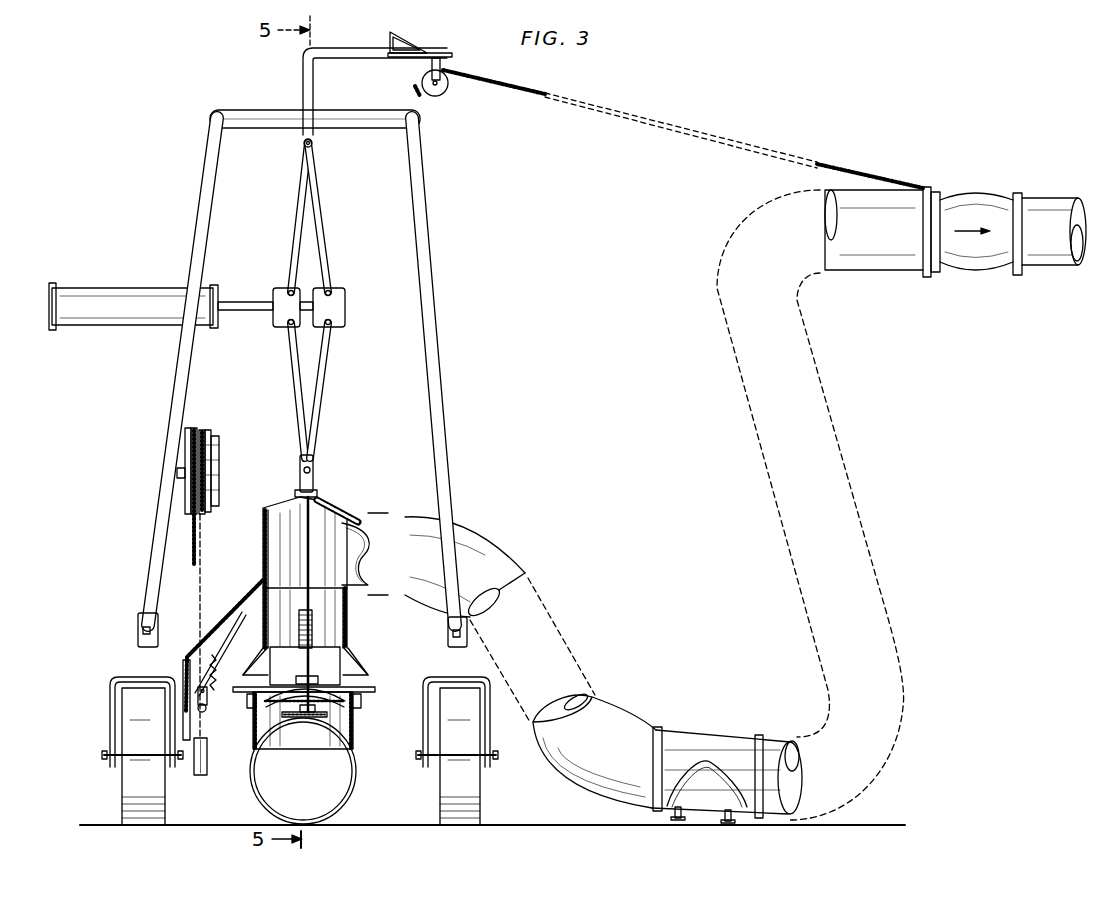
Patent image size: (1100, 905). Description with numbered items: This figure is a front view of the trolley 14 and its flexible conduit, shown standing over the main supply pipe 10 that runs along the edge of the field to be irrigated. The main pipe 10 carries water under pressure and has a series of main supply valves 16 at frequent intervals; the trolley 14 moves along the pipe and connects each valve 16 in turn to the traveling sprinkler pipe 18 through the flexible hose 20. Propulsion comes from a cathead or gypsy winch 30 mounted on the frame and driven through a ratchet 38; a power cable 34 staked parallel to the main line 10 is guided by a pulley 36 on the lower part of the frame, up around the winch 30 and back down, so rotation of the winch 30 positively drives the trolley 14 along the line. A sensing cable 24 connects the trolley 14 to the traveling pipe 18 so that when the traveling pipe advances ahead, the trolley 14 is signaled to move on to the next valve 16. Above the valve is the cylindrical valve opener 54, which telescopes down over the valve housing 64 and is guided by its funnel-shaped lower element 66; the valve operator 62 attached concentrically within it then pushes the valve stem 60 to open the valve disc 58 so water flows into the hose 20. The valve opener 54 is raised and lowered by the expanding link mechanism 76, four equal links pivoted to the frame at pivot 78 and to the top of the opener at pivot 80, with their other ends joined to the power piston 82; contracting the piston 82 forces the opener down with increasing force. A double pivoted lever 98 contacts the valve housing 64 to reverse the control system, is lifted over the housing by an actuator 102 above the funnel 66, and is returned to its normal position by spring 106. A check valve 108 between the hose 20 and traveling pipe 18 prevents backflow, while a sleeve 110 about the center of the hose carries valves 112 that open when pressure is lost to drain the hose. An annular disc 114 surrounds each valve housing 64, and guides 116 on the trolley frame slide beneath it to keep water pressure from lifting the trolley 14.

The main supply pipe 10 is at (257, 797).
The trolley 14 is at (452, 357).
The main supply valve 16 is at (353, 740).
The traveling sprinkler pipe 18 is at (1031, 198).
The flexible conduit or hose 20 is at (853, 258).
The sensing cable 24 is at (482, 84).
The cathead or gypsy winch 30 is at (208, 430).
The power cable 34 is at (205, 560).
The pulley 36 is at (208, 773).
The ratchet 38 is at (220, 464).
The valve opener 54 is at (345, 513).
The valve disc 58 is at (303, 719).
The valve stem 60 is at (305, 666).
The valve operator 62 is at (308, 566).
The valve housing 64 is at (374, 690).
The funnel-shaped lower element 66 is at (360, 664).
The expanding link mechanism 76 is at (338, 222).
The frame pivot 78 is at (313, 143).
The valve opener pivot 80 is at (311, 470).
The power piston 82 is at (150, 297).
The double pivoted lever 98 is at (221, 650).
The actuator 102 is at (256, 585).
The spring 106 is at (217, 688).
The check valve 108 is at (968, 196).
The sleeve 110 is at (678, 737).
The drain valves 112 is at (727, 815).
The annular disc 114 is at (352, 698).
The guides 116 is at (250, 708).